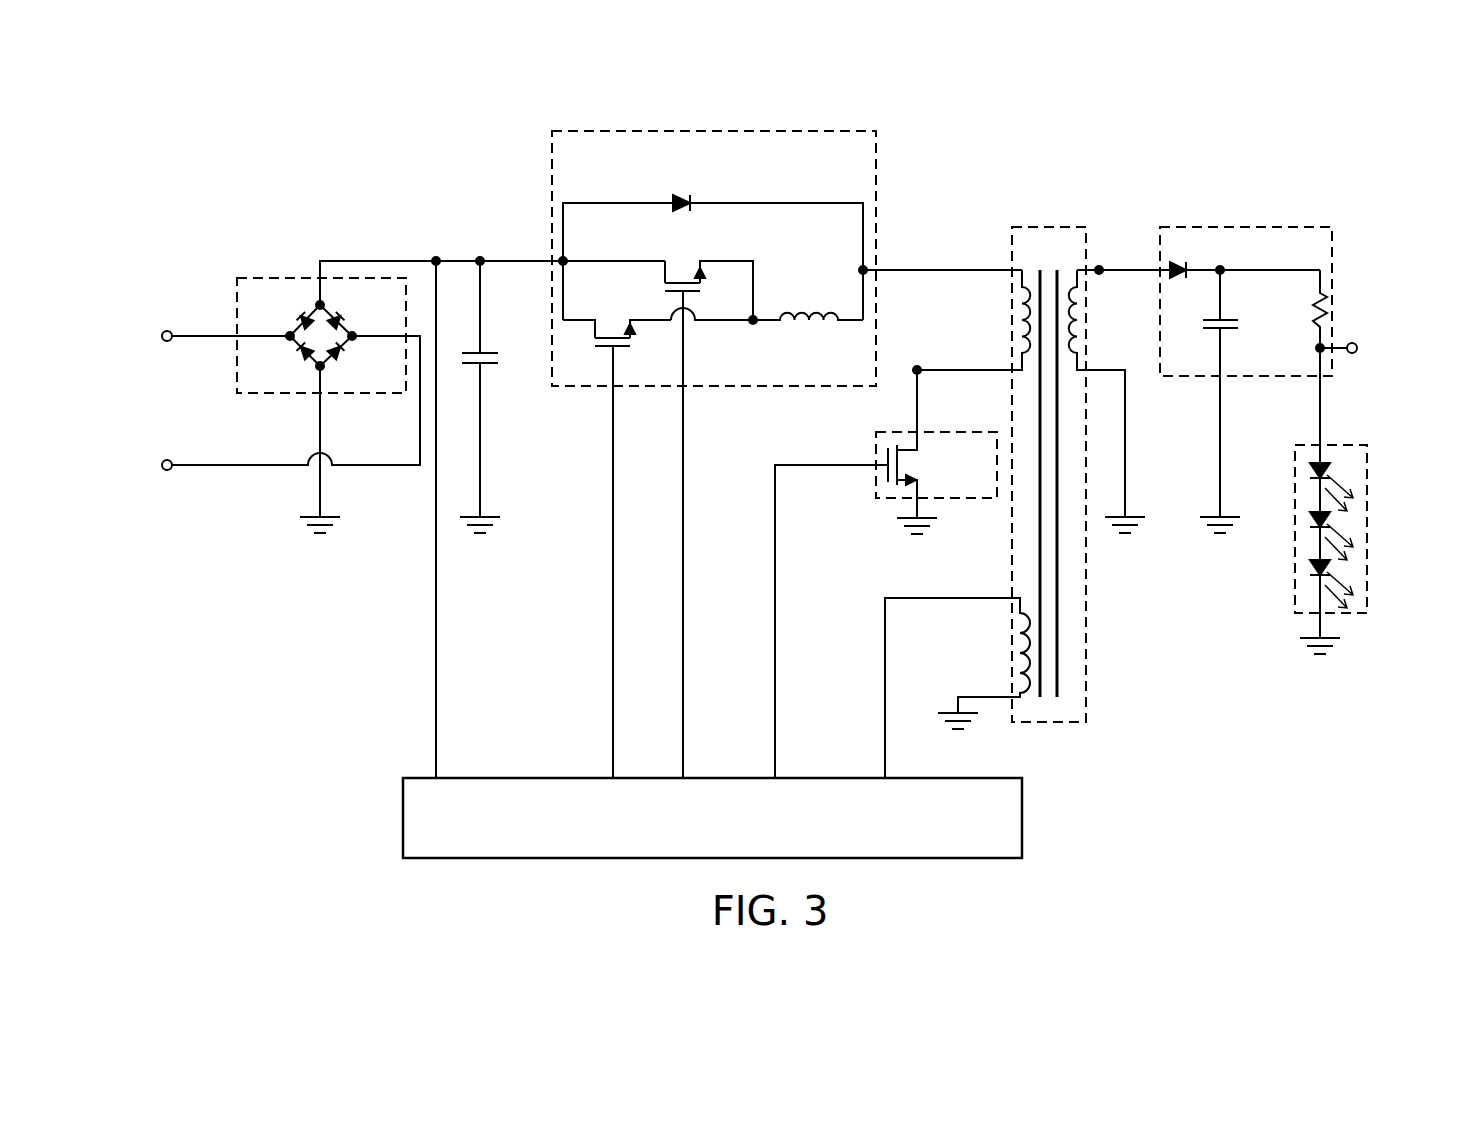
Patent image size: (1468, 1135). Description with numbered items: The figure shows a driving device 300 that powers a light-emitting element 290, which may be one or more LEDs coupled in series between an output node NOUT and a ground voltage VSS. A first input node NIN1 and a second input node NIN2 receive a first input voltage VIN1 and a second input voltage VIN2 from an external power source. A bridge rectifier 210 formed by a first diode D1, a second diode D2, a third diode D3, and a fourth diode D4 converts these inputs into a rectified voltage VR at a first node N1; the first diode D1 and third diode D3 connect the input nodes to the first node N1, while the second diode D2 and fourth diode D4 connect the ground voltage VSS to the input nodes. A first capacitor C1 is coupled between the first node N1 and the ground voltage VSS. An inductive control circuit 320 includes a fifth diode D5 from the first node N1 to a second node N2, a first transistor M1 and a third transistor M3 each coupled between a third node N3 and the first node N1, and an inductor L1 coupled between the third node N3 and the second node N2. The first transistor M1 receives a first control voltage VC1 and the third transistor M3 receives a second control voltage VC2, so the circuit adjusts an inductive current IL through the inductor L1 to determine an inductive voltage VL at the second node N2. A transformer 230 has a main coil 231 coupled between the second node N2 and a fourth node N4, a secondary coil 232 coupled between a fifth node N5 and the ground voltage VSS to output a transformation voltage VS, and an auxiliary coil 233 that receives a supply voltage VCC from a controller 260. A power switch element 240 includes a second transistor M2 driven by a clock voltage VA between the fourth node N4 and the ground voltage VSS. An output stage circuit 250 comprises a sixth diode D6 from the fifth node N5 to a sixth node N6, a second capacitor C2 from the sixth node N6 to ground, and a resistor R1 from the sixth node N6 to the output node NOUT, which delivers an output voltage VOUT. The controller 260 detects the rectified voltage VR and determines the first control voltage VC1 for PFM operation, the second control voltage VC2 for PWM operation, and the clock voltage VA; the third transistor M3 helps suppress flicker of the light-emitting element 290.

The driving device 300 is at (188, 138).
The bridge rectifier 210 is at (268, 278).
The first diode D1 is at (296, 312).
The second diode D2 is at (296, 358).
The third diode D3 is at (348, 312).
The fourth diode D4 is at (348, 358).
The first node N1 is at (320, 303).
The second node N2 is at (860, 268).
The third node N3 is at (753, 334).
The fourth node N4 is at (917, 368).
The fifth node N5 is at (1099, 268).
The sixth node N6 is at (1222, 268).
The first input node NIN1 is at (193, 337).
The second input node NIN2 is at (258, 408).
The first input voltage VIN1 is at (220, 331).
The second input voltage VIN2 is at (240, 462).
The rectified voltage VR is at (410, 259).
The first capacitor C1 is at (491, 353).
The inductive control circuit 320 is at (554, 131).
The fifth diode D5 is at (683, 196).
The first transistor M1 is at (612, 322).
The third transistor M3 is at (685, 268).
The inductor L1 is at (810, 334).
The inductive current IL is at (775, 303).
The first control voltage VC1 is at (608, 705).
The second control voltage VC2 is at (698, 563).
The inductive voltage VL is at (950, 268).
The transformer 230 is at (1048, 227).
The main coil 231 is at (1012, 325).
The secondary coil 232 is at (1090, 323).
The auxiliary coil 233 is at (1012, 652).
The power switch element 240 is at (876, 440).
The second transistor M2 is at (922, 465).
The clock voltage VA is at (771, 705).
The supply voltage VCC is at (881, 705).
The transformation voltage VS is at (1108, 262).
The output stage circuit 250 is at (1245, 227).
The sixth diode D6 is at (1185, 285).
The second capacitor C2 is at (1228, 318).
The resistor R1 is at (1316, 303).
The output node NOUT is at (1375, 349).
The output voltage VOUT is at (1328, 390).
The light-emitting element 290 is at (1295, 595).
The controller 260 is at (1025, 817).
The ground voltage VSS is at (820, 641).